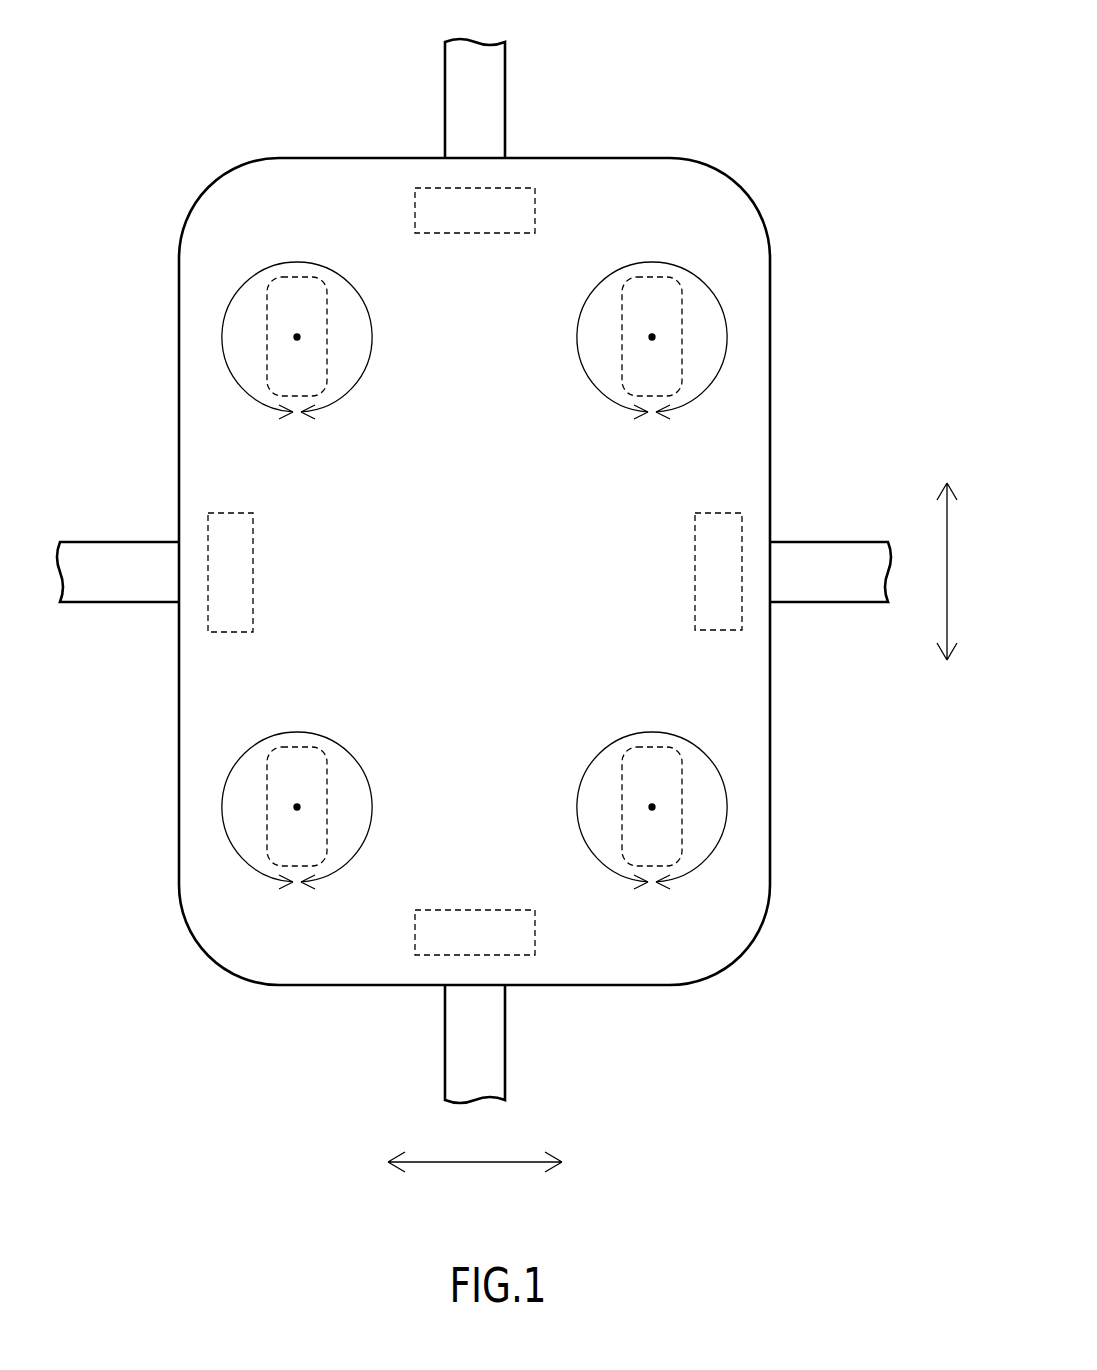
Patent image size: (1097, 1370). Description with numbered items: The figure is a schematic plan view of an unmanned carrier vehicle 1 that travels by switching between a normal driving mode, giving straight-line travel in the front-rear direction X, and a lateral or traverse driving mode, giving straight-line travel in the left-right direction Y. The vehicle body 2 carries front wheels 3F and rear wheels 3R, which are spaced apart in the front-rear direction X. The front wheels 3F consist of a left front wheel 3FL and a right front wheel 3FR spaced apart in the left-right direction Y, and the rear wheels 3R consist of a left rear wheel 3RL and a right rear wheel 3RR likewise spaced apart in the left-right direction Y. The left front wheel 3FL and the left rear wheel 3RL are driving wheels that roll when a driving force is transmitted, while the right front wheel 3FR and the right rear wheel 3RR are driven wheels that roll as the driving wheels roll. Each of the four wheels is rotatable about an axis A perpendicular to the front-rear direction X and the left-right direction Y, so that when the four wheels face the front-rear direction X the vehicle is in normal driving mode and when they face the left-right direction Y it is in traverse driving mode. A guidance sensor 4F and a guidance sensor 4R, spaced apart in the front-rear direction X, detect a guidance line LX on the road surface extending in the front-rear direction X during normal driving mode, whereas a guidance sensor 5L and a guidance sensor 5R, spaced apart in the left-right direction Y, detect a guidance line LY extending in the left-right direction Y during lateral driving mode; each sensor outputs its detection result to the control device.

The unmanned carrier vehicle 1 is at (820, 57).
The vehicle body 2 is at (352, 158).
The front wheels 3F is at (474, 320).
The rear wheels 3R is at (474, 790).
The left front wheel 3FL is at (294, 278).
The right front wheel 3FR is at (649, 278).
The left rear wheel 3RL is at (294, 748).
The right rear wheel 3RR is at (649, 748).
The guidance sensor 4F is at (478, 235).
The guidance sensor 4R is at (472, 908).
The guidance sensor 5L is at (255, 572).
The guidance sensor 5R is at (694, 574).
The axis A is at (300, 337).
The guidance line LX is at (507, 97).
The guidance line LY is at (114, 540).
The front-rear direction X is at (947, 574).
The left-right direction Y is at (485, 1171).